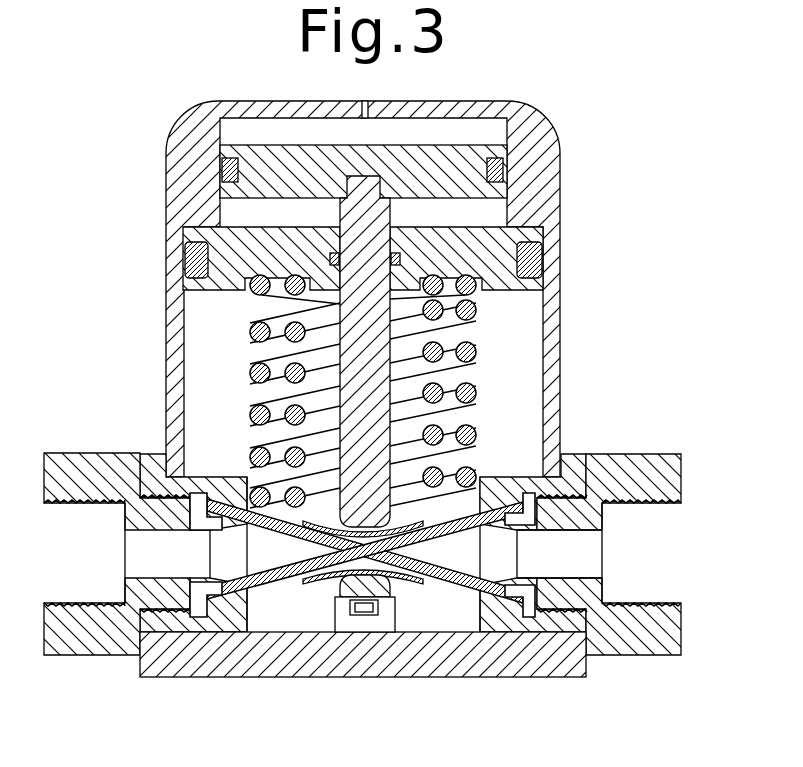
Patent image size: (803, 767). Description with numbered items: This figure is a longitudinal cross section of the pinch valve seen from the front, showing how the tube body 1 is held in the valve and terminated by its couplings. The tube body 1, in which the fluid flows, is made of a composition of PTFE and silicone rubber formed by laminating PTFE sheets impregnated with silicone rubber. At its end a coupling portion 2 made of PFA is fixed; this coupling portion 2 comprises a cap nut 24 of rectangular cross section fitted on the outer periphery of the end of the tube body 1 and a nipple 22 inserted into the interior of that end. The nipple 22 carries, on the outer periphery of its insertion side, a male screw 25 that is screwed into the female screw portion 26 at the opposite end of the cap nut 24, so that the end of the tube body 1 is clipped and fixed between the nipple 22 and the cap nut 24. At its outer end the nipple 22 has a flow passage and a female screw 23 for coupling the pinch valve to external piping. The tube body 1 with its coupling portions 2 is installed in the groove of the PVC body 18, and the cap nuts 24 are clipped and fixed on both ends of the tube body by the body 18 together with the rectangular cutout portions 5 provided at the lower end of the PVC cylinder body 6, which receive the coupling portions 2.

The tube body 1 is at (443, 512).
The coupling portion 2 is at (680, 378).
The cutout portion 5 is at (148, 456).
The cylinder body 6 is at (536, 141).
The body 18 is at (277, 667).
The nipple 22 is at (654, 493).
The female screw 23 is at (633, 600).
The cap nut 24 is at (559, 491).
The male screw 25 is at (548, 608).
The female screw portion 26 is at (590, 646).